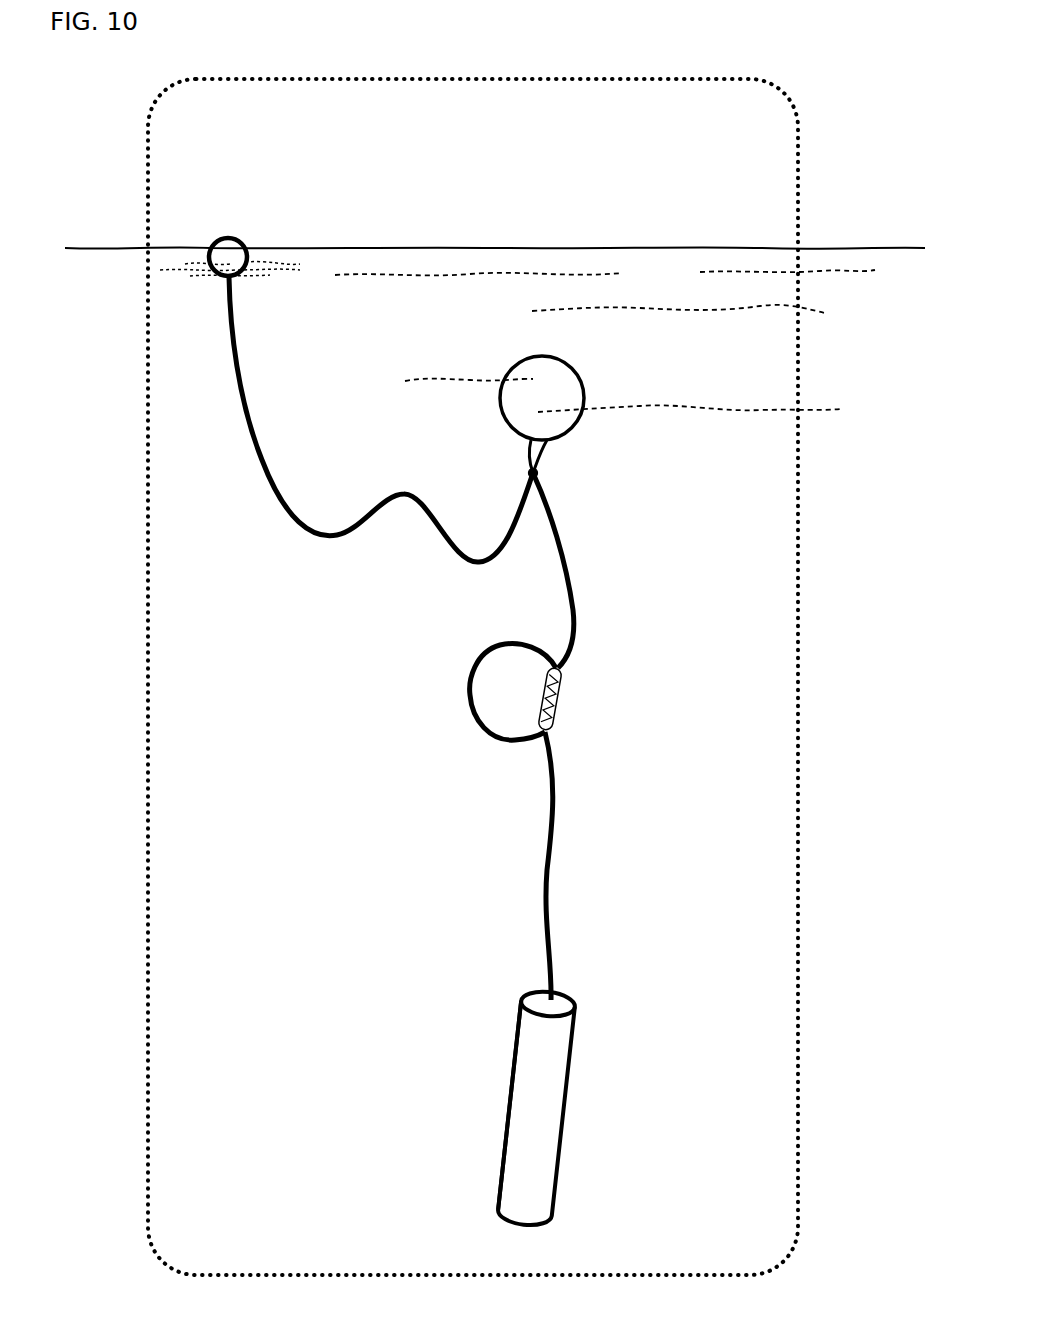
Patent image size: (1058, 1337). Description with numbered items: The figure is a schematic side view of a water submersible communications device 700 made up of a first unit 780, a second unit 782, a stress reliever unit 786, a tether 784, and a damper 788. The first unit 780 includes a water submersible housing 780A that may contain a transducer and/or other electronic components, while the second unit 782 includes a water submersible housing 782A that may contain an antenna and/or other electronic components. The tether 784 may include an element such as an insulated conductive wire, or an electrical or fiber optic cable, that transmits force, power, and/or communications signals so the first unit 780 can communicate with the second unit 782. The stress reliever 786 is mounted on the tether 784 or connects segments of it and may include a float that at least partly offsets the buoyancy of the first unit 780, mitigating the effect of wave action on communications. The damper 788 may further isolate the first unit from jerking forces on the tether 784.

The water submersible communications device 700 is at (762, 83).
The first unit 780 is at (504, 1105).
The water submersible housing 780A is at (533, 1063).
The second unit 782 is at (235, 224).
The water submersible housing 782A is at (240, 248).
The tether 784 is at (572, 585).
The stress reliever unit 786 is at (570, 387).
The damper 788 is at (603, 693).